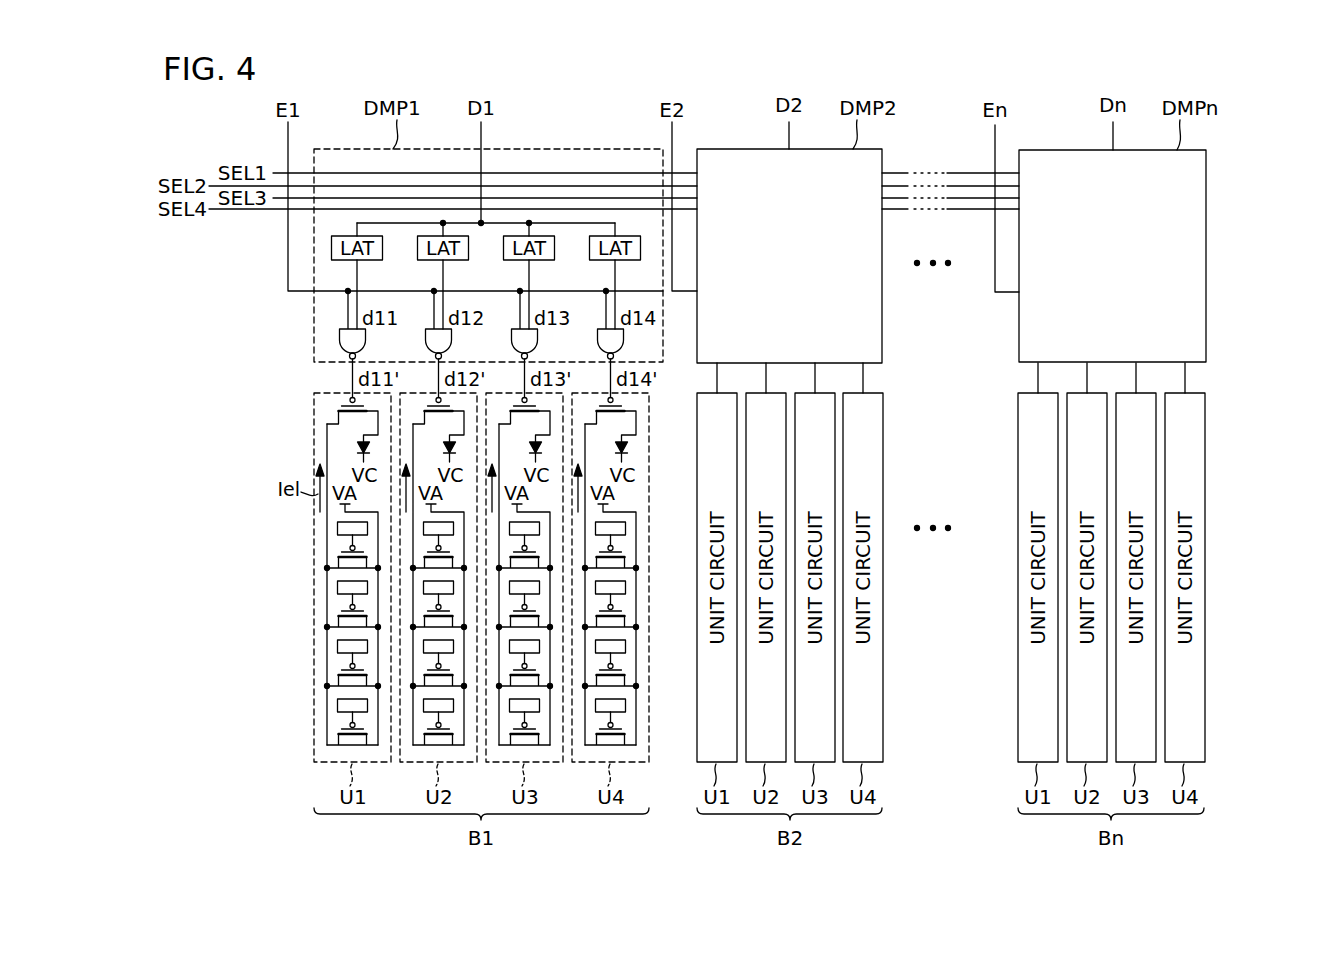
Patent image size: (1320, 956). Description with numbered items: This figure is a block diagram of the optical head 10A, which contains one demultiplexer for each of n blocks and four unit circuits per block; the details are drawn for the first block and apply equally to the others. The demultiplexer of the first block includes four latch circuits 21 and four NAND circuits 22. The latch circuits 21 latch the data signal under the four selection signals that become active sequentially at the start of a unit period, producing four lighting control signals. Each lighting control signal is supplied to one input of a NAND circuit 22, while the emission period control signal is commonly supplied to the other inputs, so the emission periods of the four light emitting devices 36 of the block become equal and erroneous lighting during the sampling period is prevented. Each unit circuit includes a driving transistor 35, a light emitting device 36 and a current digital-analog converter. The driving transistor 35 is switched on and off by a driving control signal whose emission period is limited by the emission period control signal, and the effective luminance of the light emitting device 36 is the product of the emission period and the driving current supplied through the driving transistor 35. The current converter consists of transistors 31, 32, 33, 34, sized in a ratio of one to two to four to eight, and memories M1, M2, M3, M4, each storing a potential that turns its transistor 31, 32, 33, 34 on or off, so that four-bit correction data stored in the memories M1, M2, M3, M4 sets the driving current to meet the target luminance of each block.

The optical head 10A is at (1245, 138).
The latch circuit 21 is at (369, 260).
The NAND circuit 22 is at (366, 340).
The transistor 31 is at (338, 560).
The transistor 32 is at (338, 619).
The transistor 33 is at (338, 678).
The transistor 34 is at (338, 738).
The driving transistor 35 is at (337, 415).
The light emitting device 36 is at (356, 450).
The memory M1 is at (337, 527).
The memory M2 is at (337, 587).
The memory M3 is at (337, 647).
The memory M4 is at (337, 706).